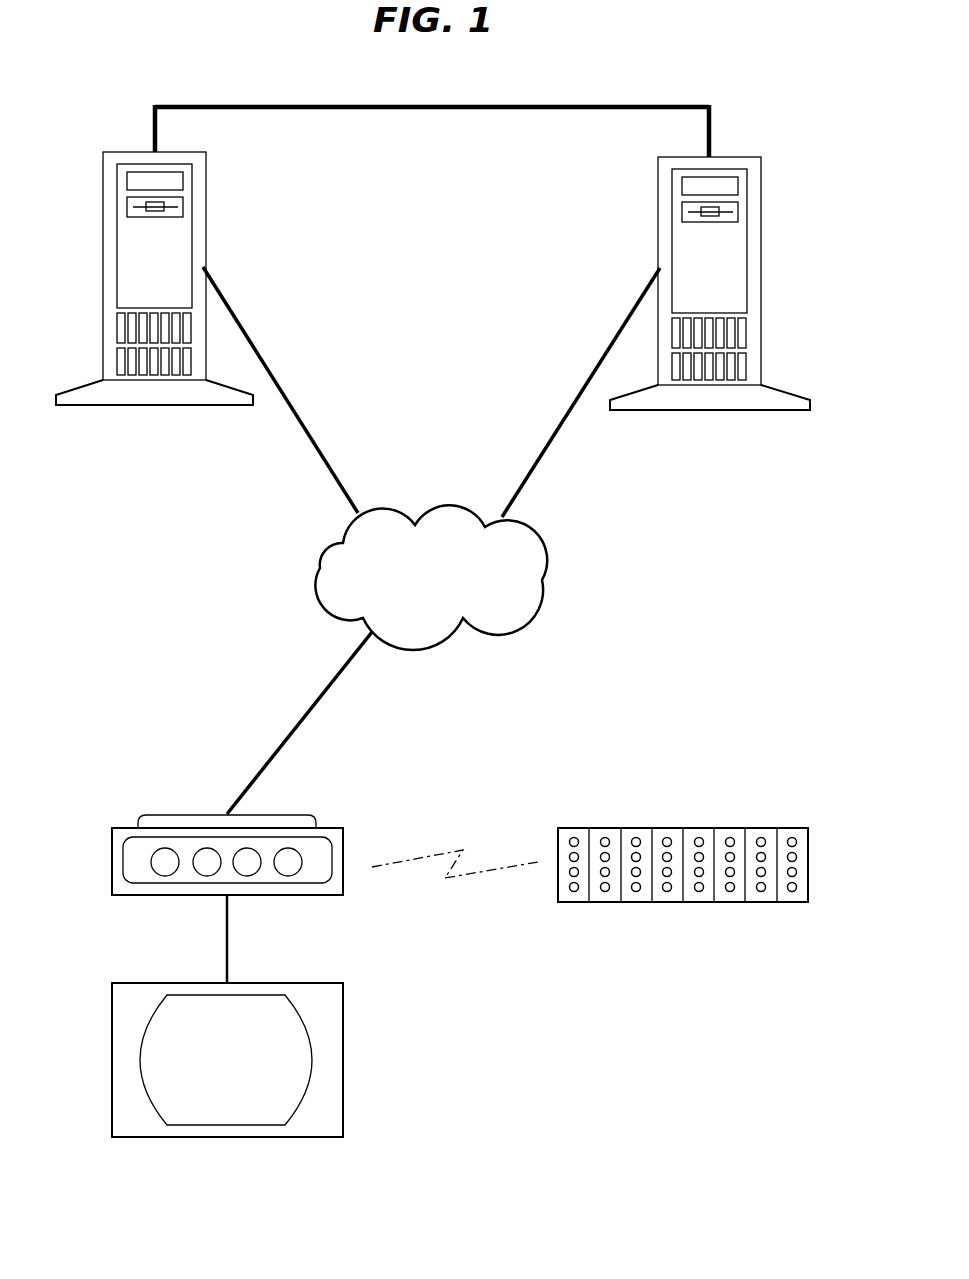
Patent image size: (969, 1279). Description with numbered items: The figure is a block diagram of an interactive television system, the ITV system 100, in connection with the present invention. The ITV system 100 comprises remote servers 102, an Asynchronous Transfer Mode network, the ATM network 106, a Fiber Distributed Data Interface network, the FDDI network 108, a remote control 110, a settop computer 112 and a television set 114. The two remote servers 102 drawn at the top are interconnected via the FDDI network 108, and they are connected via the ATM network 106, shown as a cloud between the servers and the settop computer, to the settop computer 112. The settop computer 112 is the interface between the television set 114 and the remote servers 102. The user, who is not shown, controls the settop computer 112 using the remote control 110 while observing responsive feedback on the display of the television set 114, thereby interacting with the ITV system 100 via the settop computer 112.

The ITV system 100 is at (800, 593).
The remote servers 102 is at (103, 256).
The Asynchronous Transfer Mode (ATM) network 106 is at (322, 566).
The Fiber Distributed Data Interface (FDDI) network 108 is at (553, 106).
The remote control 110 is at (810, 858).
The settop computer 112 is at (112, 858).
The television set 114 is at (112, 1030).